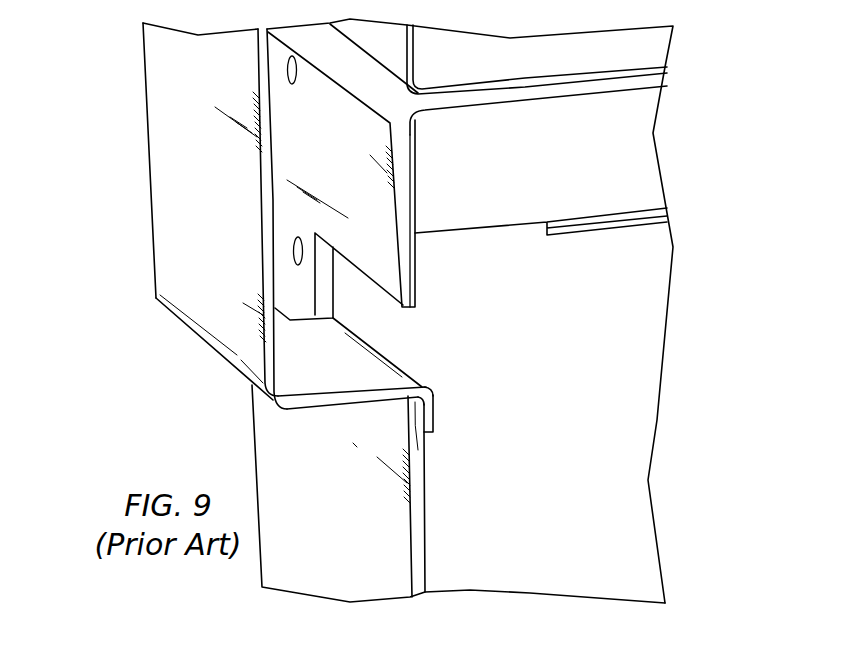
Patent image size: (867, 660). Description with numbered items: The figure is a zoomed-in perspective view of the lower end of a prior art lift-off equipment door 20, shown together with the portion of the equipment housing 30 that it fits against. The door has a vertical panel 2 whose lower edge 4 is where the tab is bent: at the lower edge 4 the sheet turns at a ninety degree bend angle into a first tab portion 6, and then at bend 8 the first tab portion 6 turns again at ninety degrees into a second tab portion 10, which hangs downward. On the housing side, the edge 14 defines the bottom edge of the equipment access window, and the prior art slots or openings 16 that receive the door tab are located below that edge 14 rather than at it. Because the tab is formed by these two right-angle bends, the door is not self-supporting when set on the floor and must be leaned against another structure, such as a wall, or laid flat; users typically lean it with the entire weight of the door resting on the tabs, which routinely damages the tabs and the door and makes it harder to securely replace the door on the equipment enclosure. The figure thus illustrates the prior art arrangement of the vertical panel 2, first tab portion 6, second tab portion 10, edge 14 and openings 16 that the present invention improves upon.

The prior art channel assembly 20 is at (120, 227).
The vertical panel 2 is at (218, 226).
The lower edge 4 is at (207, 343).
The first tab portion 6 is at (333, 410).
The bend 8 is at (430, 392).
The second tab portion 10 is at (436, 413).
The edge 14 is at (327, 48).
The slots or openings 16 is at (428, 455).
The lower panel 30 is at (351, 524).